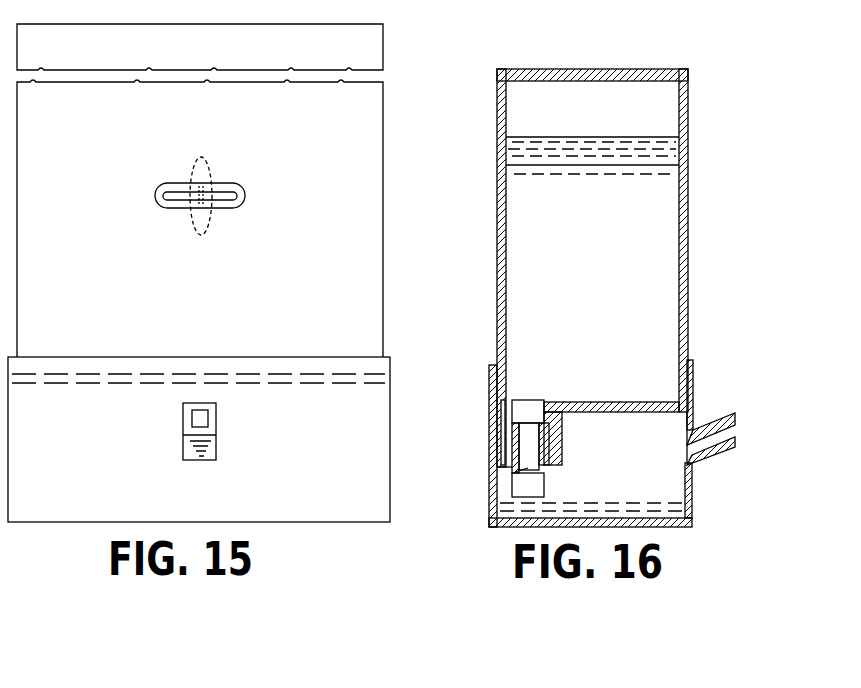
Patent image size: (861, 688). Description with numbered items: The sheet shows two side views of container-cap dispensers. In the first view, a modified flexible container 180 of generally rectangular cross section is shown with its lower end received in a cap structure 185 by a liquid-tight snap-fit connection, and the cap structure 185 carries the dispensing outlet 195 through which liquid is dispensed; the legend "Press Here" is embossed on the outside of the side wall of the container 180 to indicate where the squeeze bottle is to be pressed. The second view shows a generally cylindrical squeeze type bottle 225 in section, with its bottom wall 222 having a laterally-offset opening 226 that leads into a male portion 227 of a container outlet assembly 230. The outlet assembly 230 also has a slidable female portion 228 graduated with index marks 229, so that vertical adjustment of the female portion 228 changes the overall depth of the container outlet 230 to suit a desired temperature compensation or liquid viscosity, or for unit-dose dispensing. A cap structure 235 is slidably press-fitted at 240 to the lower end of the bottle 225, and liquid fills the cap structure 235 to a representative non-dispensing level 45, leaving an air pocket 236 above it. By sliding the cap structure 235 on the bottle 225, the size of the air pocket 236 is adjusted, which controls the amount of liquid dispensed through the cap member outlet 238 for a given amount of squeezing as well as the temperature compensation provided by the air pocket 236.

In FIG. 15, the flexible container 180 is at (372, 180).
In FIG. 15, the cap structure 185 is at (358, 402).
In FIG. 15, the dispensing outlet 195 is at (216, 427).
In FIG. 16, the bottom wall 222 is at (625, 402).
In FIG. 16, the squeeze type container or bottle 225 is at (687, 165).
In FIG. 16, the laterally-offset opening 226 is at (534, 396).
In FIG. 16, the male portion 227 is at (552, 422).
In FIG. 16, the slidable female portion 228 is at (512, 487).
In FIG. 16, the index marks 229 is at (540, 488).
In FIG. 16, the container outlet assembly 230 is at (556, 448).
In FIG. 16, the cap structure 235 is at (693, 481).
In FIG. 16, the air pocket 236 is at (678, 450).
In FIG. 16, the cap member outlet 238 is at (712, 417).
In FIG. 16, the slidable press fit 240 is at (694, 356).
In FIG. 16, the liquid level 45 is at (661, 503).